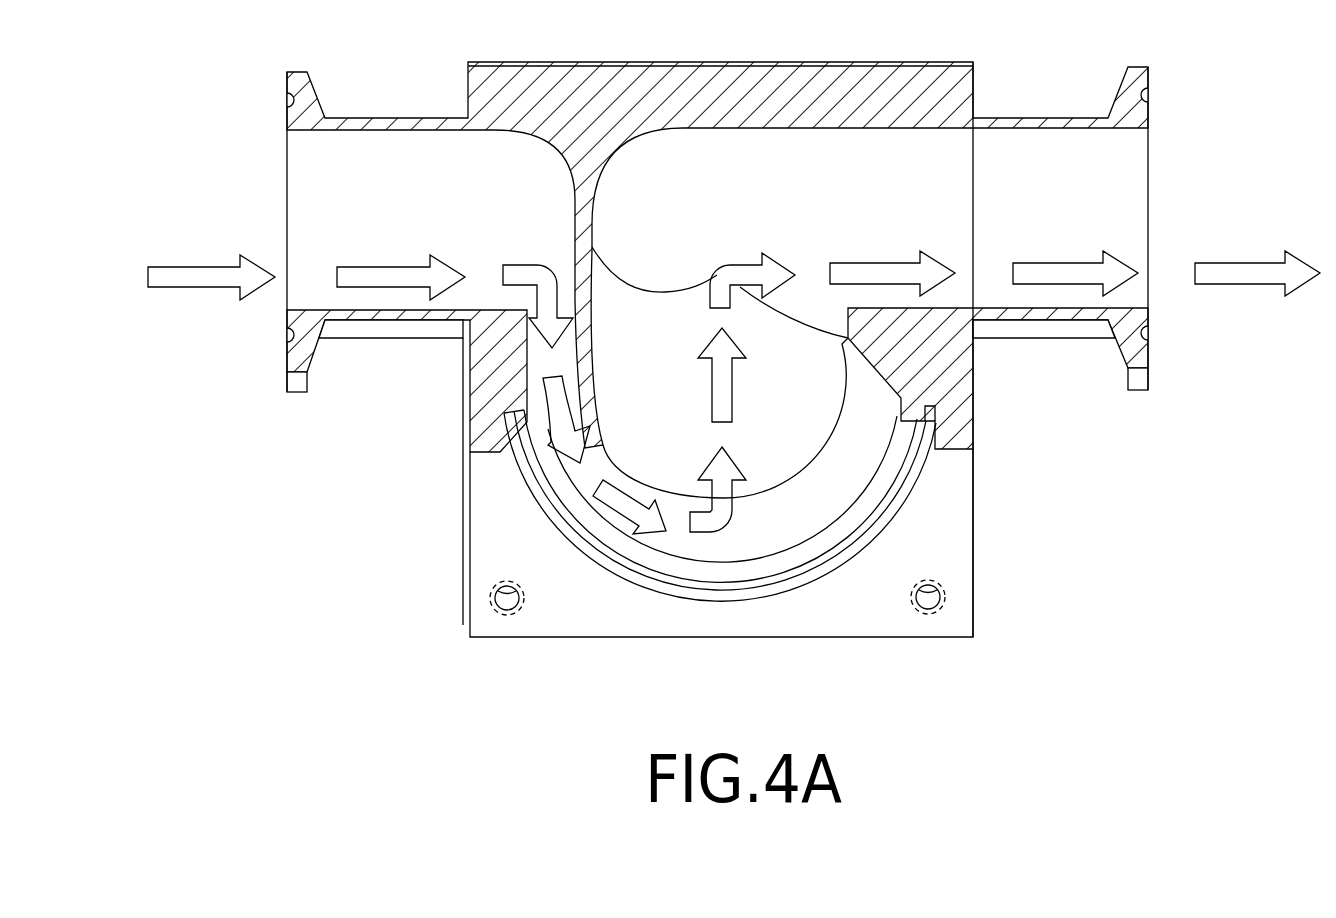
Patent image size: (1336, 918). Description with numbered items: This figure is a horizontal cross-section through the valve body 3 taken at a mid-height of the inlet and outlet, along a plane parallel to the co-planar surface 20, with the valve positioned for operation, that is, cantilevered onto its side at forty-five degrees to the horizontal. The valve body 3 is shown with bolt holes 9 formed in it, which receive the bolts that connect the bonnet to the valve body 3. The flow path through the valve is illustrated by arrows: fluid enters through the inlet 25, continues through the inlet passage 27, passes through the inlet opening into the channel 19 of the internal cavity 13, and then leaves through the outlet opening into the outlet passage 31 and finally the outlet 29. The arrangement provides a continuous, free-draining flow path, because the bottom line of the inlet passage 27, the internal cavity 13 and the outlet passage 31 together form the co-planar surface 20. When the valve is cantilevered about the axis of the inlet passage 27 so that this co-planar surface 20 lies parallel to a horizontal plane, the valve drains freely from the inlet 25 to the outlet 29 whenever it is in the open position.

The valve body 3 is at (856, 608).
The bolt holes 9 is at (502, 598).
The internal cavity 13 is at (795, 437).
The channel 19 is at (549, 358).
The co-planar surface 20 is at (1060, 213).
The inlet 25 is at (284, 176).
The inlet passage 27 is at (388, 165).
The outlet 29 is at (1150, 202).
The outlet passage 31 is at (968, 190).